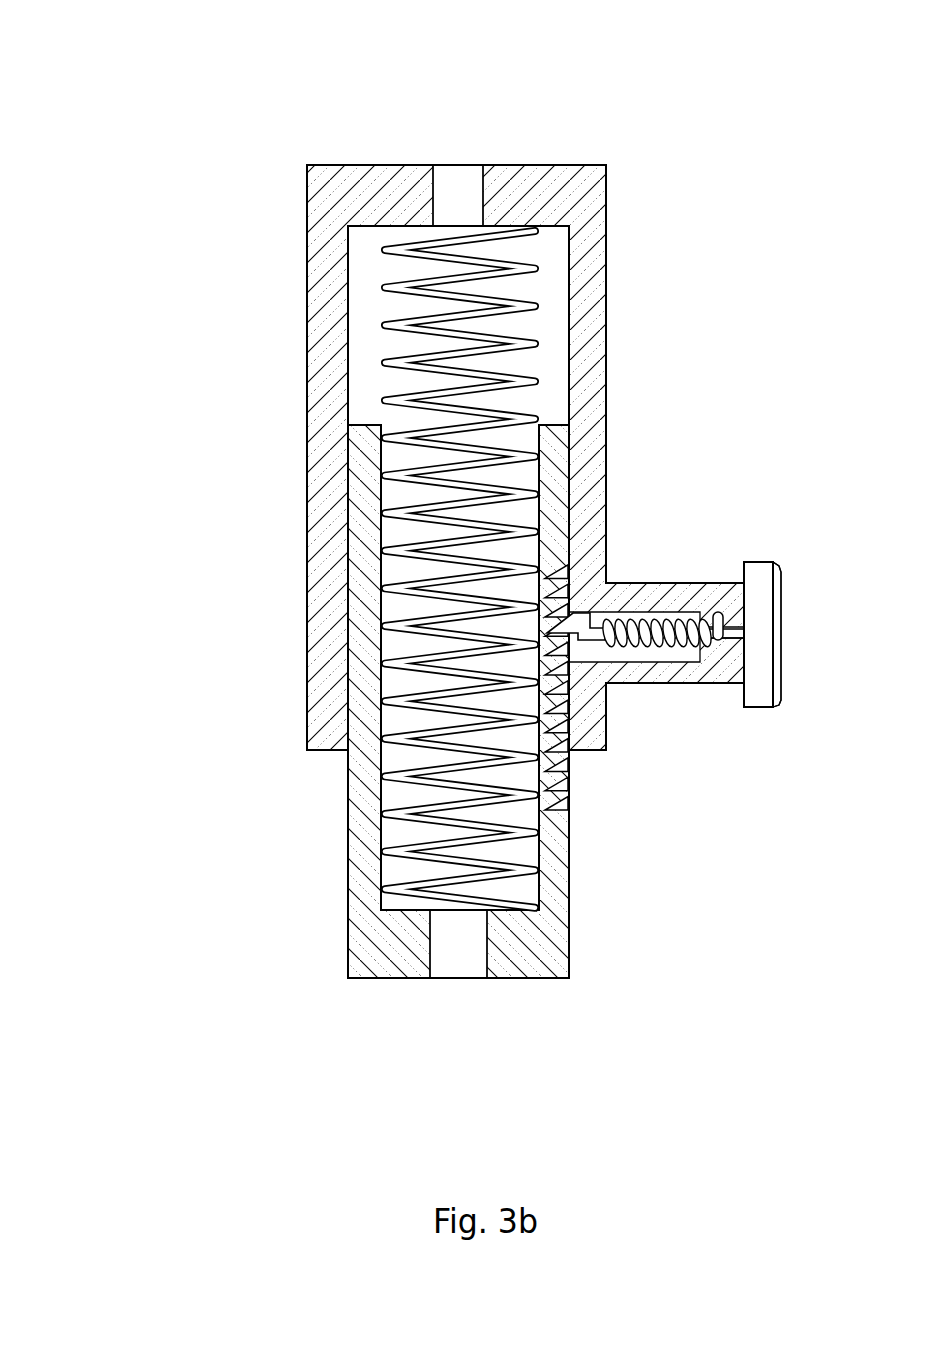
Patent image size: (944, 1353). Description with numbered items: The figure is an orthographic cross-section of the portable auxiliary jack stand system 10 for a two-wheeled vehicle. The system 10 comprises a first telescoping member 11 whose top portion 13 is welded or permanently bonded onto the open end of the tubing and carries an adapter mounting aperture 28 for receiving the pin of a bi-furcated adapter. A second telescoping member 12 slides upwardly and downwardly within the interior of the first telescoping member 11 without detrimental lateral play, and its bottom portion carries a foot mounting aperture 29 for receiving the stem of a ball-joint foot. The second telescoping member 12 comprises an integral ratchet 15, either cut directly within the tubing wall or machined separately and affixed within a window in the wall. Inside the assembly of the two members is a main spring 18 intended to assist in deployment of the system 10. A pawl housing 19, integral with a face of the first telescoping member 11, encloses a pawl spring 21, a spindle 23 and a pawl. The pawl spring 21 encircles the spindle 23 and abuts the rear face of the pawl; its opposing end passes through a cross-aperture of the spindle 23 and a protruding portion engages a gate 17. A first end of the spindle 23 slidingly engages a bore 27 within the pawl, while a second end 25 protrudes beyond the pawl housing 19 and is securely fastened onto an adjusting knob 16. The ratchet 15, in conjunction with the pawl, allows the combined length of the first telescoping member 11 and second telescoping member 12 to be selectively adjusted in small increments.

The portable auxiliary jack stand system 10 is at (128, 141).
The first telescoping member 11 is at (605, 343).
The second telescoping member 12 is at (348, 758).
The top portion 13 is at (380, 163).
The ratchet 15 is at (572, 758).
The adjusting knob 16 is at (782, 595).
The gate 17 is at (718, 614).
The main spring 18 is at (527, 262).
The pawl housing 19 is at (650, 583).
The pawl spring 21 is at (635, 622).
The spindle 23 is at (580, 634).
The second end 25 is at (753, 577).
The bore 27 is at (604, 692).
The adapter mounting aperture 28 is at (455, 182).
The foot mounting aperture 29 is at (456, 968).